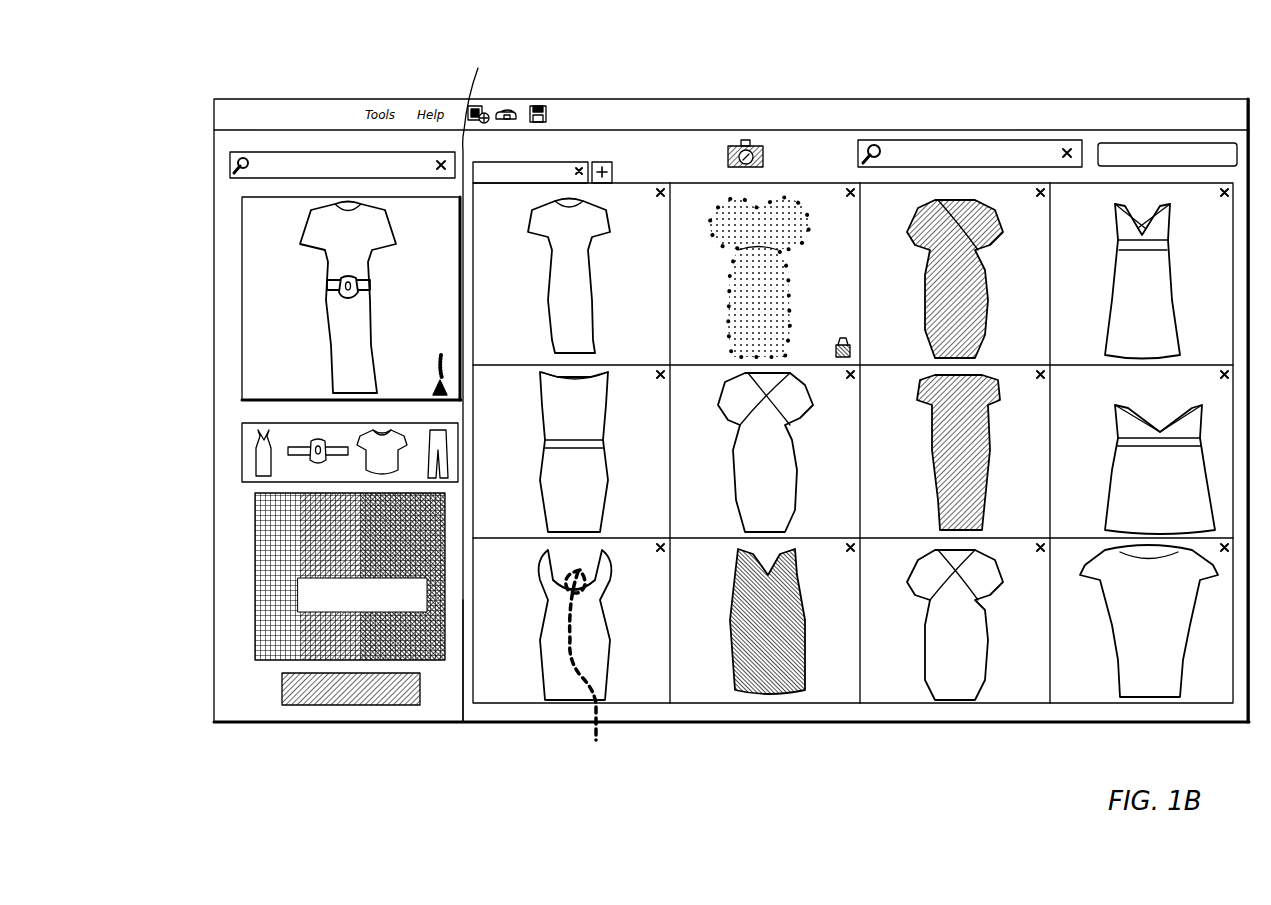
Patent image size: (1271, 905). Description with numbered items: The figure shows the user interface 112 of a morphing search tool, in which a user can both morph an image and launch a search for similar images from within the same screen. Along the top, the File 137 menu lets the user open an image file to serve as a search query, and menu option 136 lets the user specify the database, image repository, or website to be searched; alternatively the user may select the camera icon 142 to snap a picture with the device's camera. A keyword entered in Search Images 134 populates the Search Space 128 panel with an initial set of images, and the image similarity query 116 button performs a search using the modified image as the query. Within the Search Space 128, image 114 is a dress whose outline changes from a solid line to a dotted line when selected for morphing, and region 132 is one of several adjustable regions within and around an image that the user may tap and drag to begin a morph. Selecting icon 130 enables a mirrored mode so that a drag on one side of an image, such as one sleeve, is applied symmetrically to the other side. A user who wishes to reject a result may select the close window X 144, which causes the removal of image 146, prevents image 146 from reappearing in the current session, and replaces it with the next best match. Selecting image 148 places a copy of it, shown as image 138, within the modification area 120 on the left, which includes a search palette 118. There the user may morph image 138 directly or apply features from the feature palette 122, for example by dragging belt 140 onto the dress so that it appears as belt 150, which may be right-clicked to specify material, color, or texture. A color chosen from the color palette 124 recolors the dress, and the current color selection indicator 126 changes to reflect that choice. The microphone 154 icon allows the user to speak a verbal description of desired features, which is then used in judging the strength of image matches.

The user interface 112 is at (1130, 99).
The image 114 is at (800, 205).
The image similarity query 116 is at (1170, 143).
The search palette 118 is at (385, 152).
The modification area 120 is at (483, 385).
The feature palette 122 is at (463, 722).
The color palette 124 is at (256, 661).
The current color selection indicator 126 is at (329, 706).
The Search Space 128 is at (563, 162).
The icon 130 is at (846, 344).
The region 132 is at (576, 661).
The Search Images 134 is at (958, 140).
The menu option 136 is at (308, 111).
The File 137 is at (246, 111).
The image 138 is at (382, 265).
The belt 140 is at (298, 447).
The camera icon 142 is at (757, 144).
The close window "X" 144 is at (845, 555).
The image 146 is at (725, 690).
The image 148 is at (606, 213).
The belt 150 is at (328, 278).
The microphone 154 is at (444, 352).